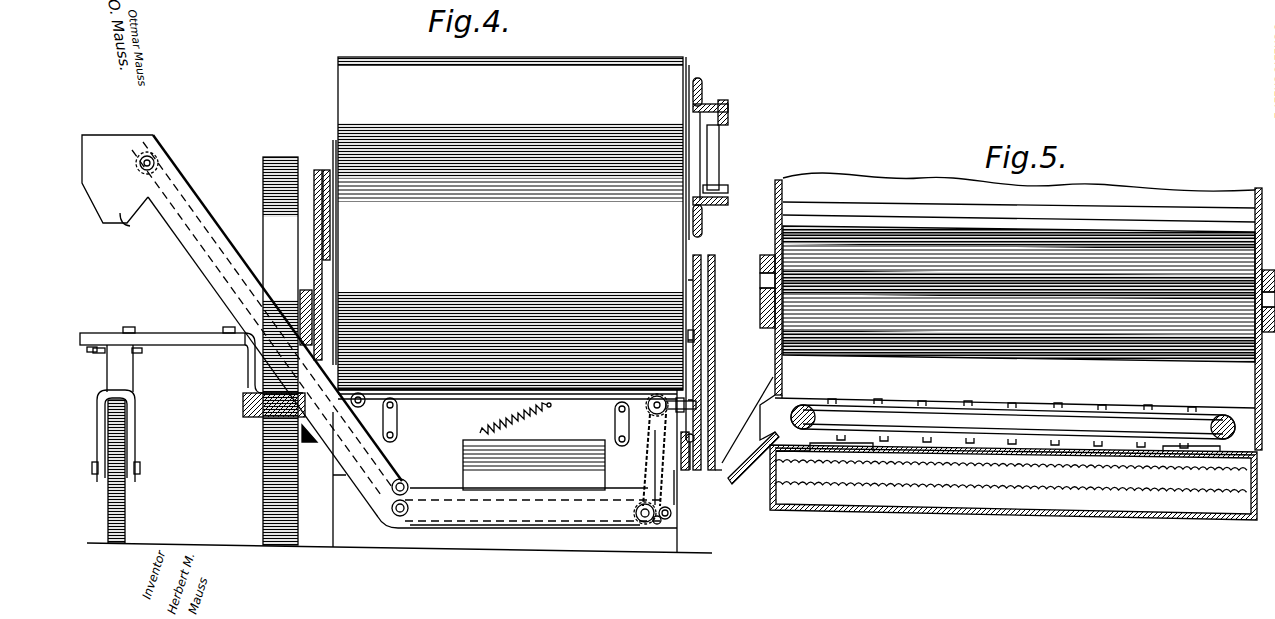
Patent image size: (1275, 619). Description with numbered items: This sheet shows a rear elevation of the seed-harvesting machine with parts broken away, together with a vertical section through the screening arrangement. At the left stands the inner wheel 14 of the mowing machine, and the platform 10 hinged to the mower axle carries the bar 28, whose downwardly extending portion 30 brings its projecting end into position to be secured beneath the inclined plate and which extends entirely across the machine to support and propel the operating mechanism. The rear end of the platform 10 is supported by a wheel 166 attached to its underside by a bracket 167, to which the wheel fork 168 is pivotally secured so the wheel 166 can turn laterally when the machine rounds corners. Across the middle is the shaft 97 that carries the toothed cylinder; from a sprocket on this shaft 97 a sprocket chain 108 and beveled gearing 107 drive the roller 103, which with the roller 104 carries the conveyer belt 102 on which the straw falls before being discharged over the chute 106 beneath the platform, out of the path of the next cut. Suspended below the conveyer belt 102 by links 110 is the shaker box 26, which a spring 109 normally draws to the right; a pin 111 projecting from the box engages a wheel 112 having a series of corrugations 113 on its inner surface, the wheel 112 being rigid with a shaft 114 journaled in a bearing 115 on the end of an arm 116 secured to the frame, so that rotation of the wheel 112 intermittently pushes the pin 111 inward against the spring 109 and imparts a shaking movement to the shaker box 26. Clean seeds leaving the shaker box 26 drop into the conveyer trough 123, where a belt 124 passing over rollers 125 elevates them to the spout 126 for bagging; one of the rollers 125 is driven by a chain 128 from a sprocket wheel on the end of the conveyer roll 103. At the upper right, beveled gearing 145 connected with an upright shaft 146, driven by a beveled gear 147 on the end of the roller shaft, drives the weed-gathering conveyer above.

In FIG. 4, the platform 10 is at (206, 346).
In FIG. 4, the inner wheel 14 is at (270, 484).
In FIG. 4, the shaker box 26 is at (446, 440).
In FIG. 4, the bar 28 is at (203, 333).
In FIG. 4, the downwardly extending portion 30 is at (250, 389).
In FIG. 4, the shaft 97 is at (716, 270).
In FIG. 5, the conveyer belt 102 is at (1070, 412).
In FIG. 5, the roller 103 is at (1210, 426).
In FIG. 4, the roller 104 is at (379, 331).
In FIG. 5, the roller 104 is at (817, 417).
In FIG. 4, the chute 106 is at (744, 472).
In FIG. 4, the beveled gearing 107 is at (657, 396).
In FIG. 4, the sprocket chain 108 is at (702, 372).
In FIG. 4, the spring 109 is at (522, 412).
In FIG. 4, the links 110 is at (398, 406).
In FIG. 4, the pin 111 is at (682, 444).
In FIG. 4, the wheel 112 is at (682, 470).
In FIG. 4, the corrugations 113 is at (675, 517).
In FIG. 4, the shaft 114 is at (716, 470).
In FIG. 4, the bearing 115 is at (689, 462).
In FIG. 4, the arm 116 is at (706, 414).
In FIG. 4, the conveyer trough 123 is at (540, 527).
In FIG. 4, the belt 124 is at (465, 528).
In FIG. 4, the rollers 125 is at (157, 160).
In FIG. 4, the spout 126 is at (128, 233).
In FIG. 4, the chain 128 is at (652, 484).
In FIG. 4, the beveled gearing 145 is at (720, 100).
In FIG. 4, the upright shaft 146 is at (720, 146).
In FIG. 4, the beveled gear 147 is at (702, 230).
In FIG. 4, the wheel 166 is at (126, 494).
In FIG. 4, the bracket 167 is at (122, 364).
In FIG. 4, the wheel fork 168 is at (128, 420).